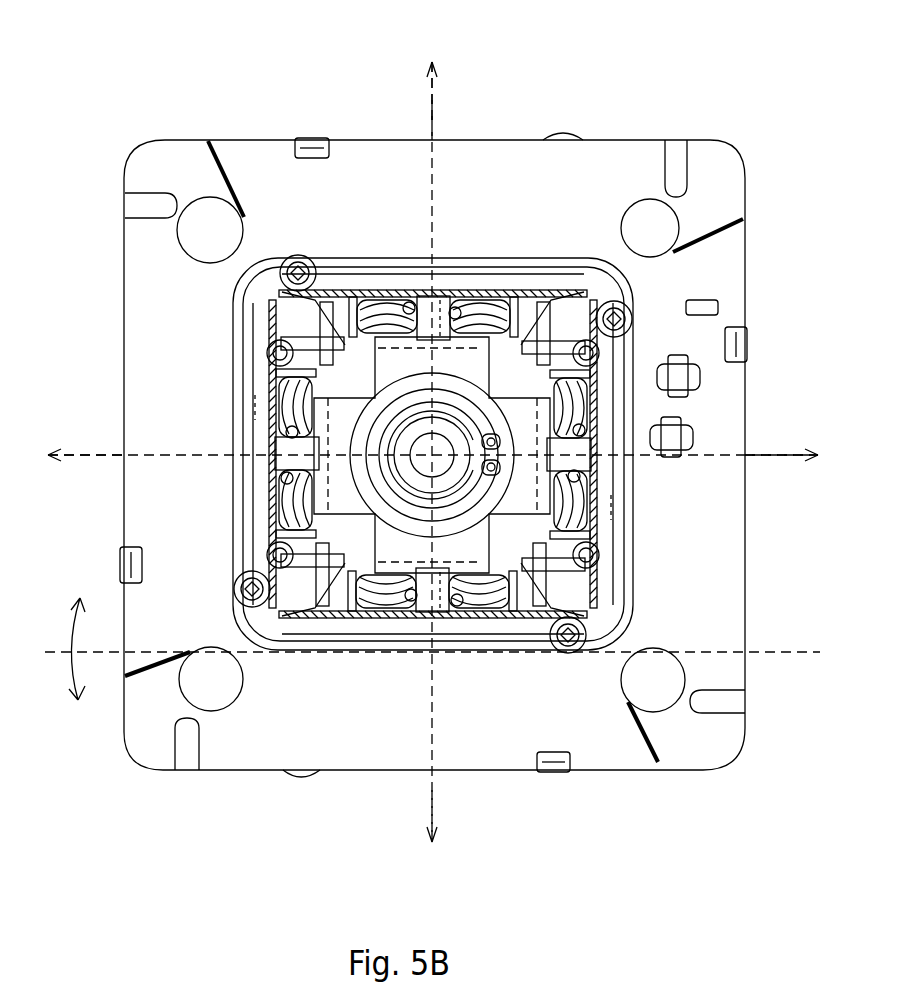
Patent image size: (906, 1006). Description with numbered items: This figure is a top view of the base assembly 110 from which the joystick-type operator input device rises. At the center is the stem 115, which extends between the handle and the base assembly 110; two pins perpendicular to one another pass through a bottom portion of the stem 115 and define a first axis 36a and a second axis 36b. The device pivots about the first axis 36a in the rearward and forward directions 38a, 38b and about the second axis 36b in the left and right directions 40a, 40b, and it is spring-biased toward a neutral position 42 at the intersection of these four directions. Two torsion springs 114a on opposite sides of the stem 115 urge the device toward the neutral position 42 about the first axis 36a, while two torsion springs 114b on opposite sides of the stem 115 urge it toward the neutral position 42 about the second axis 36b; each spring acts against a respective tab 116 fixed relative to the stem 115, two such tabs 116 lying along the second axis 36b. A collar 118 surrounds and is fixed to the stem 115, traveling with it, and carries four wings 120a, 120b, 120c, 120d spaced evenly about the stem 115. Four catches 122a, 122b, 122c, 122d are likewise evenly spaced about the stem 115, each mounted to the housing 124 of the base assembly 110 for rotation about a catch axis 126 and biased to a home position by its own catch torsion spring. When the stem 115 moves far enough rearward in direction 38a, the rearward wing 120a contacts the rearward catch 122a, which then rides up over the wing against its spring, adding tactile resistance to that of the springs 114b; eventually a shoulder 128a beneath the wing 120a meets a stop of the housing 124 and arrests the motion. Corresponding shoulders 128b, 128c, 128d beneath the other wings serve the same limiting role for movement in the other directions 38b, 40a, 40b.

The base assembly 110 is at (108, 268).
The housing 124 is at (250, 158).
The catch axis 126 is at (770, 654).
The collar 118 is at (516, 408).
The stem 115 is at (442, 440).
The neutral position 42 is at (432, 456).
The torsion springs 114a is at (388, 303).
The torsion springs 114b is at (300, 532).
The tab 116 is at (272, 450).
The wing 120a is at (390, 625).
The wing 120b is at (404, 333).
The wing 120c is at (312, 494).
The wing 120d is at (548, 418).
The catch 122a is at (490, 640).
The catch 122b is at (515, 288).
The catch 122c is at (266, 376).
The catch 122d is at (603, 468).
The shoulder 128a is at (460, 640).
The stop 128b is at (455, 302).
The stop 128c is at (262, 411).
The stop 128d is at (606, 508).
The first axis 36a is at (443, 110).
The second axis 36b is at (771, 445).
The rearward direction 38a is at (440, 840).
The forward direction 38b is at (440, 66).
The left direction 40a is at (50, 468).
The right direction 40b is at (814, 468).